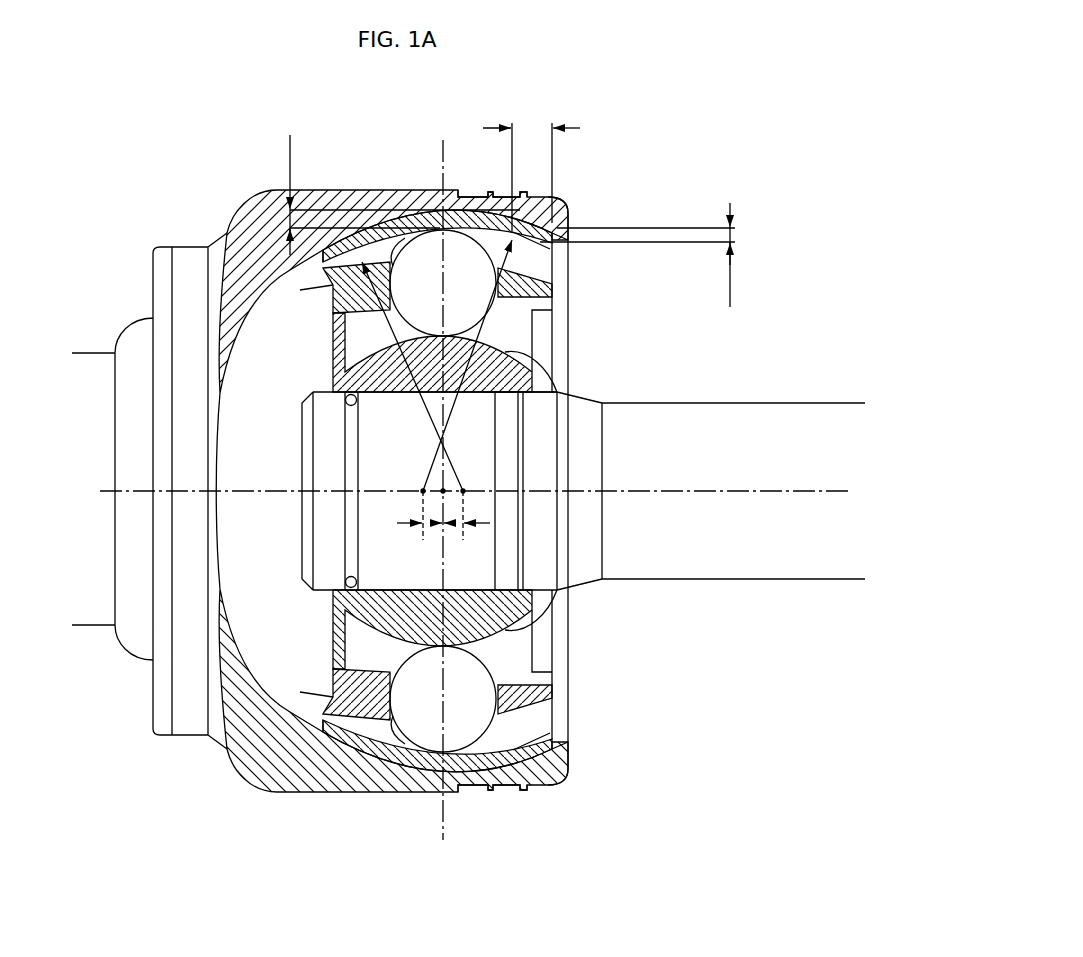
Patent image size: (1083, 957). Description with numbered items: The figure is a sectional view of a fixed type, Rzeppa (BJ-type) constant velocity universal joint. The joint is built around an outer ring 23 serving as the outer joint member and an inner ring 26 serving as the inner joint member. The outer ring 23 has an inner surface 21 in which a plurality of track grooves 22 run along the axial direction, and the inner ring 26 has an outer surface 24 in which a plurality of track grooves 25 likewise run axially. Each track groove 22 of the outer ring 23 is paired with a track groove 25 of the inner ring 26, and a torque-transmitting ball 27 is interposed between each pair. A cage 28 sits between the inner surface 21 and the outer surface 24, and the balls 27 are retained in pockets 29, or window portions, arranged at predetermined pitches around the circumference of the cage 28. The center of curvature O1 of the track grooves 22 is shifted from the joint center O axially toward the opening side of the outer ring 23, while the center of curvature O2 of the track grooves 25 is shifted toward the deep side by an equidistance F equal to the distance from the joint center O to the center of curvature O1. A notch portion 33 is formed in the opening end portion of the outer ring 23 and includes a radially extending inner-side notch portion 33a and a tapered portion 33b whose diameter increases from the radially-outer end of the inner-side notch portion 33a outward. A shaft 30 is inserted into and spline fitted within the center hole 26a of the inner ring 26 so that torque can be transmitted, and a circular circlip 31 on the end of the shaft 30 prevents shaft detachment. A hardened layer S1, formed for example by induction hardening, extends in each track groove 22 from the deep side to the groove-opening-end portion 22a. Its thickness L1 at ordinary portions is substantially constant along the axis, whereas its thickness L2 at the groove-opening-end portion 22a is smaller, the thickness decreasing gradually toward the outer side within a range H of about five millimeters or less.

The inner surface 21 is at (335, 312).
The track grooves 22 is at (548, 290).
The groove-opening-end portions 22a is at (557, 747).
The outer ring 23 is at (318, 189).
The outer surface 24 is at (350, 745).
The track grooves 25 is at (530, 365).
The inner ring 26 is at (542, 610).
The center hole 26a is at (485, 395).
The balls 27 is at (433, 258).
The cage 28 is at (550, 690).
The pockets 29 is at (420, 250).
The shaft 30 is at (771, 401).
The circlip 31 is at (347, 590).
The notch portion 33 is at (570, 754).
The inner-side notch portion 33a is at (552, 245).
The tapered portion 33b is at (575, 238).
The hardened layer S1 is at (500, 215).
The range H is at (531, 166).
The thickness of the hardened layers at other portions L1 is at (392, 195).
The thickness of the hardened layers at the track-groove-opening-end portions L2 is at (637, 255).
The equidistance F is at (443, 531).
The joint center O is at (443, 491).
The center of curvature O1 is at (463, 491).
The center of curvature O2 is at (423, 491).